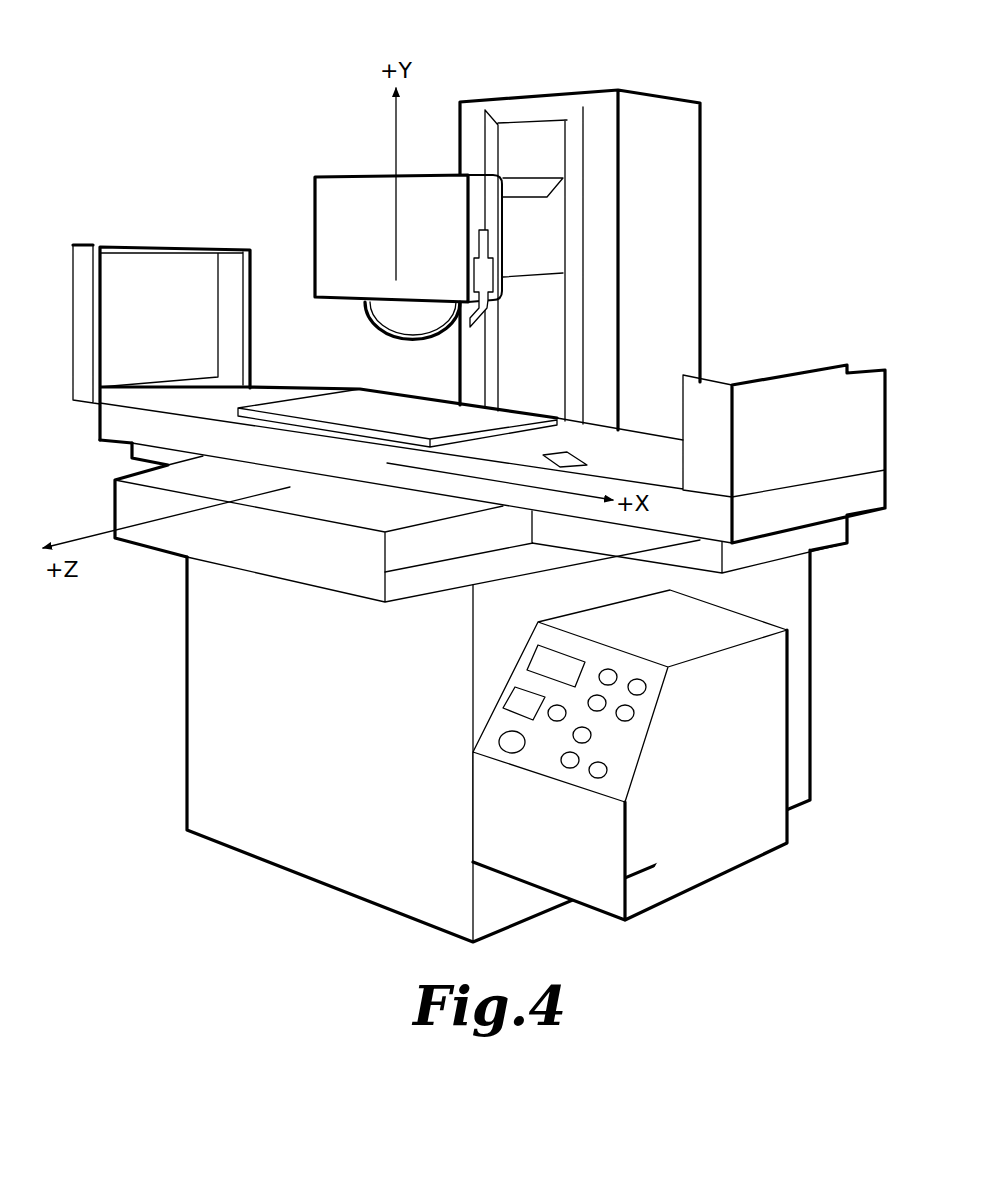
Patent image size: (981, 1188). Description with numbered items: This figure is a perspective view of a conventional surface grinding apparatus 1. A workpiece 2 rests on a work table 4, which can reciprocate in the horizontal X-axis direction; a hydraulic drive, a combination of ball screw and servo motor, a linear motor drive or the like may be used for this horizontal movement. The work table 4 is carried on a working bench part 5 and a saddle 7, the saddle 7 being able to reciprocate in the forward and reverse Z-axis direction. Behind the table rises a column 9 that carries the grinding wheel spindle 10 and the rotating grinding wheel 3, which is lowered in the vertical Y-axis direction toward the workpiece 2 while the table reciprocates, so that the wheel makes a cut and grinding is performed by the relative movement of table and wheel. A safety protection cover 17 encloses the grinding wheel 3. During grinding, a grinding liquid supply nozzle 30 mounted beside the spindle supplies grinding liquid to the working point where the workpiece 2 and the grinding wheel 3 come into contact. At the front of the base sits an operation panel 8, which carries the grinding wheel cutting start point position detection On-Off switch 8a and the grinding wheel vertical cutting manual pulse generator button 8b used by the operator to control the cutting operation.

The surface grinding apparatus 1 is at (242, 80).
The workpiece 2 is at (368, 402).
The grinding wheel 3 is at (412, 320).
The work table 4 is at (858, 503).
The working bench part 5 is at (105, 487).
The saddle 7 is at (290, 570).
The operation panel 8 is at (602, 755).
The grinding wheel cutting start point position detection On-Off switch 8a is at (567, 768).
The grinding wheel vertical cutting manual pulse generator button 8b is at (500, 738).
The column 9 is at (693, 148).
The grinding wheel spindle 10 is at (552, 237).
The safety protection cover 17 is at (358, 185).
The grinding liquid supply nozzle 30 is at (497, 306).